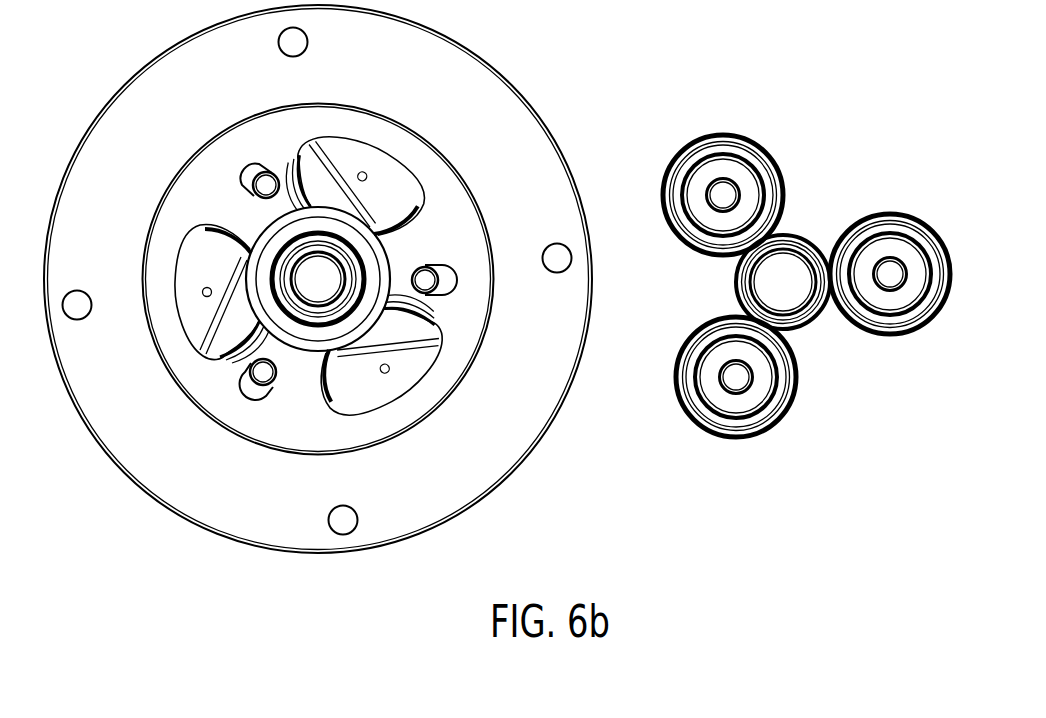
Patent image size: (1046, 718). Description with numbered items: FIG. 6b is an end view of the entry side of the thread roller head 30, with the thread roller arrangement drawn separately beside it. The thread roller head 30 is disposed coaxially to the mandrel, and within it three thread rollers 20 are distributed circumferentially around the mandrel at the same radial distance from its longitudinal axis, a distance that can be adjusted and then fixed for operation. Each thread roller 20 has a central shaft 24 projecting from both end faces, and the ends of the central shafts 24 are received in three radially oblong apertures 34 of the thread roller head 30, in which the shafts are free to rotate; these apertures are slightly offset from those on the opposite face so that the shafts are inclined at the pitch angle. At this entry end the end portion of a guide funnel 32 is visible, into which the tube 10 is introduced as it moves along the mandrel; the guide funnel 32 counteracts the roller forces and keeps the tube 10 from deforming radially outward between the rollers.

The tube 10 is at (800, 234).
The thread roller 20 is at (412, 182).
The central shaft 24 is at (262, 174).
The thread roller head 30 is at (514, 77).
The guide funnel 32 is at (340, 207).
The oblong aperture 34 is at (246, 176).